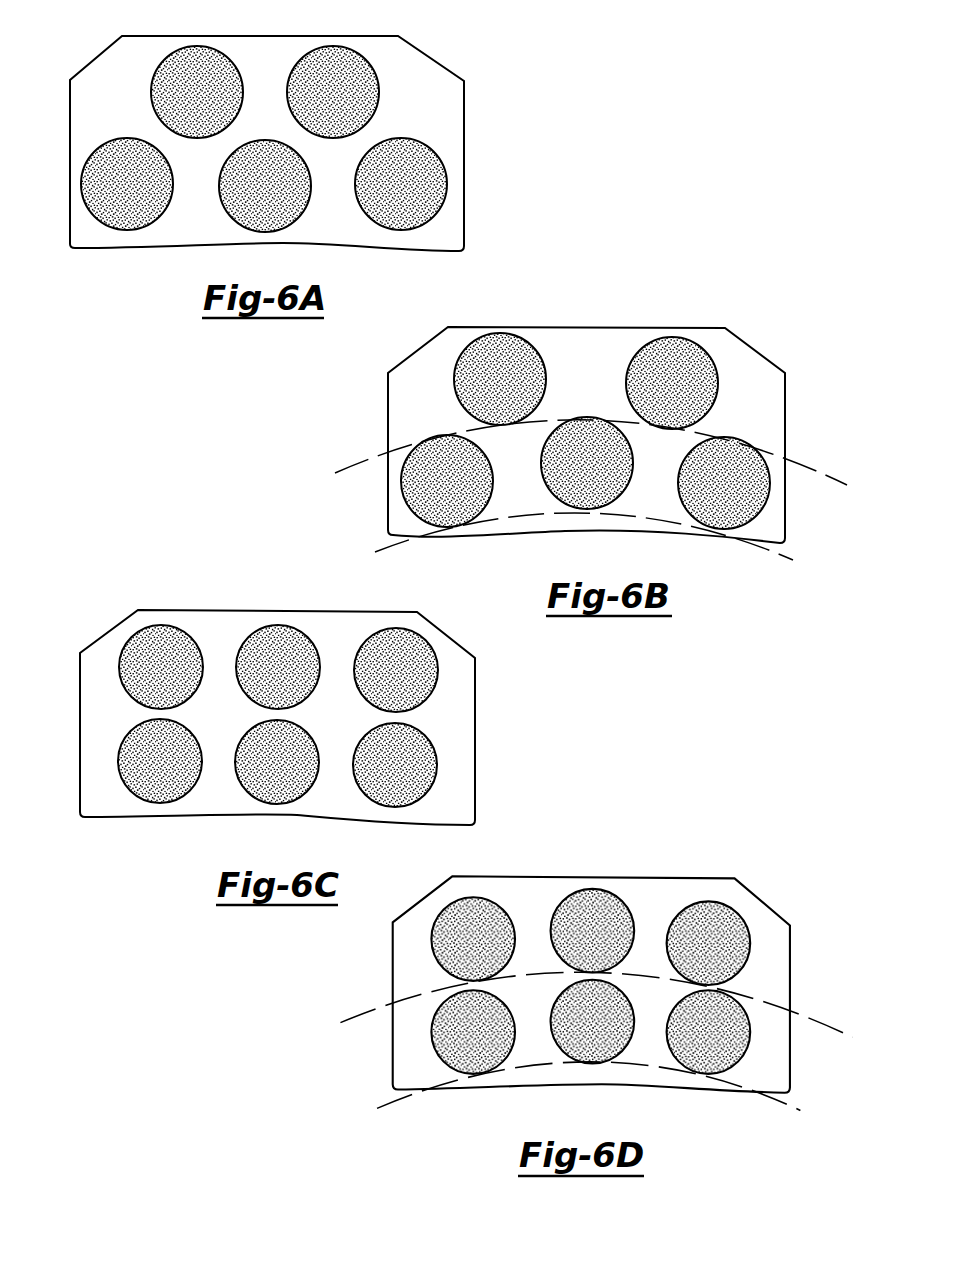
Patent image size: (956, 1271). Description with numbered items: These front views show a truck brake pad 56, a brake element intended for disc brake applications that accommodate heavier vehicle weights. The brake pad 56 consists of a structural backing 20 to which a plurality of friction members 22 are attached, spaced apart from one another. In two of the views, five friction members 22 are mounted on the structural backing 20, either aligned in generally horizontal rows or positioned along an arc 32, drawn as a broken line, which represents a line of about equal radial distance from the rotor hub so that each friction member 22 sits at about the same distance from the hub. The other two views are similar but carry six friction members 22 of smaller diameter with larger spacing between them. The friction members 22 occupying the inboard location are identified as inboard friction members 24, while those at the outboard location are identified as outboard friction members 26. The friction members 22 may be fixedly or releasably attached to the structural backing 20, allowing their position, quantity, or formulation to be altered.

In FIG. 6A, the structural backing 20 is at (453, 130).
In FIG. 6B, the structural backing 20 is at (780, 412).
In FIG. 6C, the structural backing 20 is at (467, 790).
In FIG. 6D, the structural backing 20 is at (752, 948).
In FIG. 6A, the friction members 22 is at (160, 95).
In FIG. 6B, the friction members 22 is at (473, 398).
In FIG. 6C, the friction members 22 is at (137, 733).
In FIG. 6D, the friction members 22 is at (550, 933).
In FIG. 6A, the inboard friction members 24 is at (360, 55).
In FIG. 6B, the inboard friction members 24 is at (548, 390).
In FIG. 6C, the inboard friction members 24 is at (268, 627).
In FIG. 6D, the inboard friction members 24 is at (578, 885).
In FIG. 6A, the outboard friction members 26 is at (100, 220).
In FIG. 6B, the outboard friction members 26 is at (410, 505).
In FIG. 6C, the outboard friction members 26 is at (390, 635).
In FIG. 6D, the outboard friction members 26 is at (687, 898).
In FIG. 6B, the arc 32 is at (810, 468).
In FIG. 6D, the arc 32 is at (780, 1003).
In FIG. 6A, the truck brake pad 56 is at (314, 143).
In FIG. 6B, the truck brake pad 56 is at (600, 439).
In FIG. 6C, the truck brake pad 56 is at (293, 703).
In FIG. 6D, the truck brake pad 56 is at (598, 987).